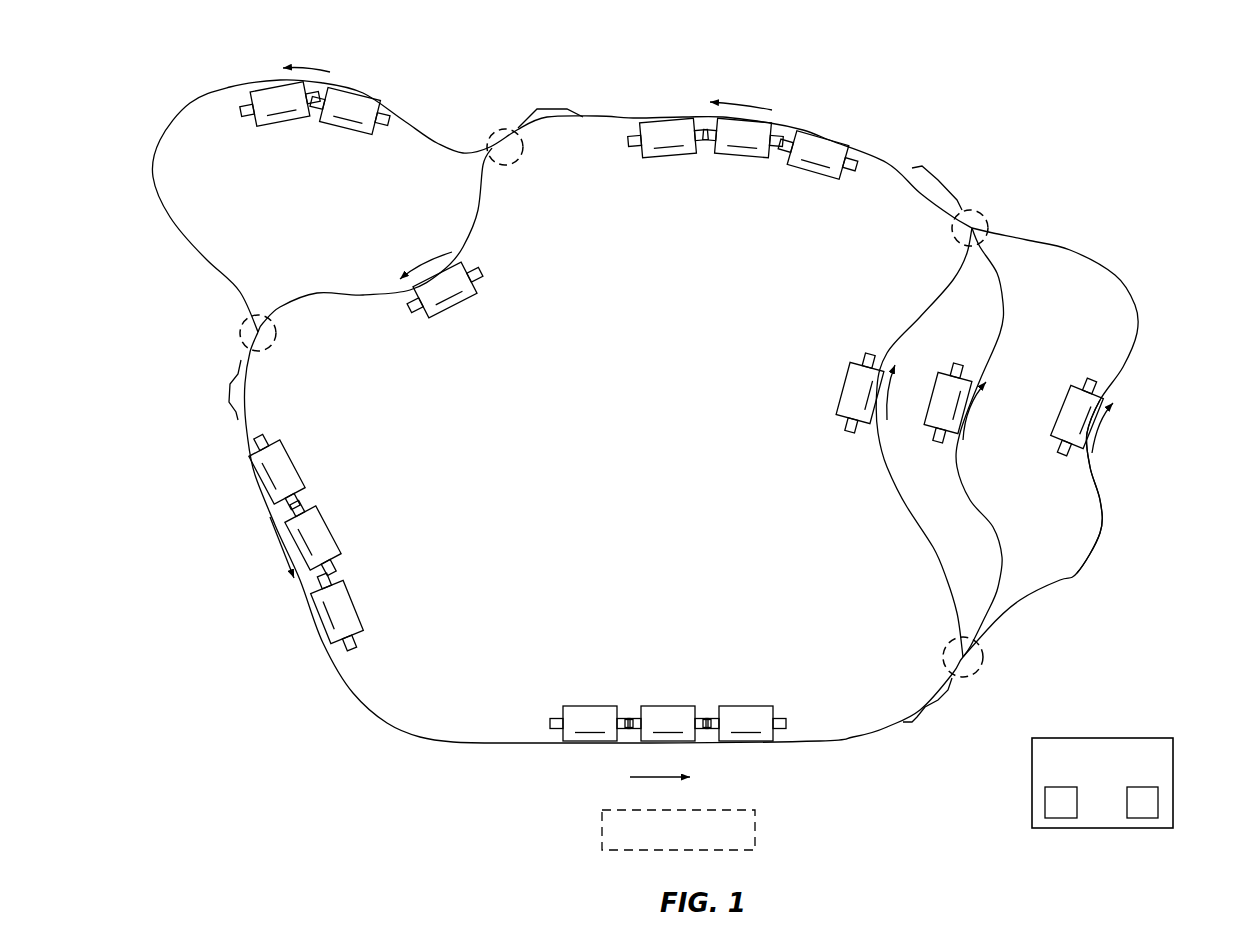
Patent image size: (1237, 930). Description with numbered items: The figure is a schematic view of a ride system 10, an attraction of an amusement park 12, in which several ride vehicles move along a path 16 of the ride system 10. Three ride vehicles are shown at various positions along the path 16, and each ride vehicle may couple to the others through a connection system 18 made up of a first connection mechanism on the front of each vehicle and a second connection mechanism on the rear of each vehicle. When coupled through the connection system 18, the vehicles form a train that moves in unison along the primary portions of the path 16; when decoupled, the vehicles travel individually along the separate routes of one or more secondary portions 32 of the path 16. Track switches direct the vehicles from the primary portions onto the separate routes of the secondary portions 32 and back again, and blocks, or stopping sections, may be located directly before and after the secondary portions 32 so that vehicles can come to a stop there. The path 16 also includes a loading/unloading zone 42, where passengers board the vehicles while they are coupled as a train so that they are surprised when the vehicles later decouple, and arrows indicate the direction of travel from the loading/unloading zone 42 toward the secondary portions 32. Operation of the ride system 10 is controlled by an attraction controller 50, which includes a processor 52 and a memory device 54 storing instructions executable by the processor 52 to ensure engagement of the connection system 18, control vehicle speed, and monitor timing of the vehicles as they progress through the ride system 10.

The ride system 10 is at (1104, 92).
The amusement park 12 is at (1077, 62).
The path 16 is at (392, 727).
The connection system 18 is at (669, 613).
The secondary portion 32 is at (498, 289).
The loading/unloading zone 42 is at (757, 826).
The attraction controller 50 is at (1109, 783).
The processor 52 is at (1060, 818).
The memory device 54 is at (1142, 818).